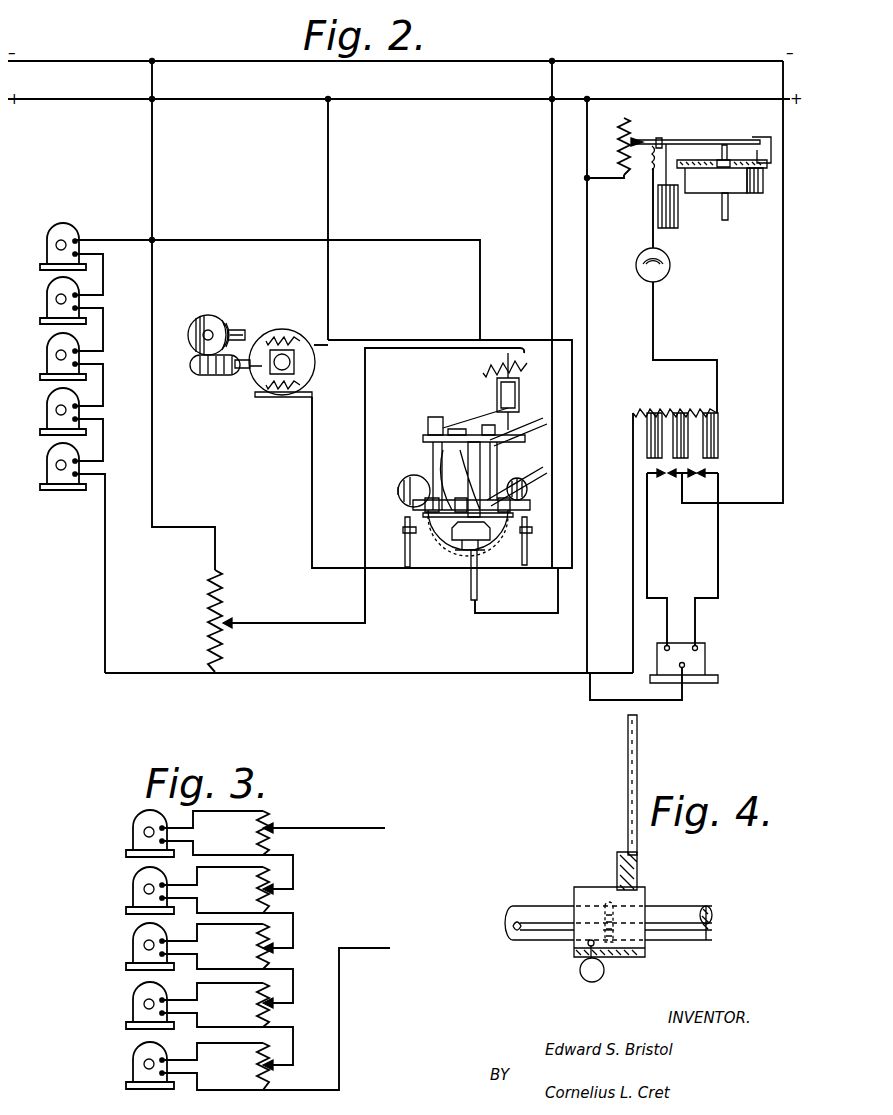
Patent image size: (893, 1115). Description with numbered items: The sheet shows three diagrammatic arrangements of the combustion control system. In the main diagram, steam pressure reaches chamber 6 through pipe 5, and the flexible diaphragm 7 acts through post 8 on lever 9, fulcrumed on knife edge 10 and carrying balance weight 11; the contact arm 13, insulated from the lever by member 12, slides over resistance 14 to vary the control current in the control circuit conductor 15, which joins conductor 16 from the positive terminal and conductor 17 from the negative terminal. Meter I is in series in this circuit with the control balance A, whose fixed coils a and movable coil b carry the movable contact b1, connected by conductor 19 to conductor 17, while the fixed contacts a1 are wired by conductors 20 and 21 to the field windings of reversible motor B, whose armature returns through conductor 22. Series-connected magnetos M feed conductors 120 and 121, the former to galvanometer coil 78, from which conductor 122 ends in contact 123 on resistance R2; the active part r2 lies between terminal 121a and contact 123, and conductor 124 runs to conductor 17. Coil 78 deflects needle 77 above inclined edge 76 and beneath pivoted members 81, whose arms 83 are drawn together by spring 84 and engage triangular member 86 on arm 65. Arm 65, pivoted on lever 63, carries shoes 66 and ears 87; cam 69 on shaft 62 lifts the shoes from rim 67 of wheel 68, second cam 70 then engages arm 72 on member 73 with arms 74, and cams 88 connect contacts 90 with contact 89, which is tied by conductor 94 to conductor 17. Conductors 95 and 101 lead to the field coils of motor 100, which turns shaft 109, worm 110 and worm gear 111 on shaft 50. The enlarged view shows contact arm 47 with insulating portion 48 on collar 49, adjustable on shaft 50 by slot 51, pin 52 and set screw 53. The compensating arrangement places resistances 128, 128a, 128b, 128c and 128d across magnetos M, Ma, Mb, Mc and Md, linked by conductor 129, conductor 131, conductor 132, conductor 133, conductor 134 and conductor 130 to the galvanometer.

In FIG. 2, the conductor 17 is at (478, 63).
In FIG. 2, the conductor 16 is at (632, 99).
In FIG. 2, the adjustable resistance 14 is at (618, 136).
In FIG. 2, the contact arm 13 is at (638, 138).
In FIG. 2, the insulating member 12 is at (659, 138).
In FIG. 2, the lever 9 is at (690, 140).
In FIG. 2, the knife edge 10 is at (758, 137).
In FIG. 2, the post 8 is at (730, 160).
In FIG. 2, the flexible diaphragm 7 is at (722, 168).
In FIG. 2, the chamber 6 is at (757, 194).
In FIG. 2, the pipe 5 is at (728, 208).
In FIG. 2, the balance weight 11 is at (678, 221).
In FIG. 2, the control circuit conductor 15 is at (325, 673).
In FIG. 2, the meter I is at (670, 268).
In FIG. 2, the conductor 19 is at (783, 310).
In FIG. 2, the conductor 120 is at (103, 240).
In FIG. 2, the magneto M is at (47, 262).
In FIG. 3, the magneto M is at (129, 832).
In FIG. 2, the conductor 121 is at (105, 590).
In FIG. 2, the conductor 124 is at (152, 483).
In FIG. 2, the worm gear 111 is at (209, 314).
In FIG. 2, the shaft 50 is at (243, 330).
In FIG. 4, the shaft 50 is at (690, 912).
In FIG. 2, the worm 110 is at (198, 377).
In FIG. 2, the shaft 109 is at (244, 370).
In FIG. 2, the double field series motor 100 is at (283, 398).
In FIG. 2, the conductor 101 is at (316, 509).
In FIG. 2, the resistance R2 is at (208, 614).
In FIG. 2, the contact 123 is at (228, 620).
In FIG. 2, the active resistance part r2 is at (223, 648).
In FIG. 2, the terminal 121a is at (214, 676).
In FIG. 2, the conductor 95 is at (396, 345).
In FIG. 2, the conductor 94 is at (518, 614).
In FIG. 2, the conductor 122 is at (366, 406).
In FIG. 2, the galvanometer movable coil 78 is at (519, 384).
In FIG. 2, the pivoted members 81 is at (434, 417).
In FIG. 2, the needle 77 is at (480, 416).
In FIG. 2, the inclined edge 76 is at (458, 420).
In FIG. 2, the spring 84 is at (423, 439).
In FIG. 2, the arms 83 is at (433, 452).
In FIG. 2, the member 73 is at (518, 422).
In FIG. 2, the arms 74 is at (520, 445).
In FIG. 2, the lever 63 is at (443, 462).
In FIG. 2, the arm 72 is at (517, 475).
In FIG. 2, the second cam 70 is at (520, 480).
In FIG. 2, the cams 88 is at (400, 488).
In FIG. 2, the wheel 68 is at (527, 490).
In FIG. 2, the shaft 62 is at (530, 508).
In FIG. 2, the metal shoes 66 is at (513, 517).
In FIG. 2, the contacts 90 is at (405, 520).
In FIG. 2, the metal ears 87 is at (403, 531).
In FIG. 2, the cam 69 is at (445, 540).
In FIG. 2, the triangular member 86 is at (463, 550).
In FIG. 2, the arm 65 is at (485, 550).
In FIG. 2, the rim 67 is at (513, 566).
In FIG. 2, the contact 89 is at (478, 590).
In FIG. 2, the control balance A is at (428, 581).
In FIG. 2, the conductor 22 is at (590, 600).
In FIG. 2, the fixed coils a is at (648, 445).
In FIG. 2, the movable coil b is at (680, 413).
In FIG. 2, the fixed contacts a1 is at (660, 478).
In FIG. 2, the movable contact b1 is at (680, 480).
In FIG. 2, the conductor 21 is at (647, 573).
In FIG. 2, the conductor 20 is at (718, 571).
In FIG. 2, the reversible motor B is at (706, 656).
In FIG. 3, the magneto Ma is at (131, 888).
In FIG. 3, the magneto Mb is at (131, 946).
In FIG. 3, the magneto Mc is at (131, 1005).
In FIG. 3, the magneto Md is at (131, 1064).
In FIG. 3, the resistance 128 is at (272, 822).
In FIG. 3, the conductor 129 is at (360, 829).
In FIG. 3, the conductor 131 is at (293, 878).
In FIG. 3, the resistance 128a is at (255, 889).
In FIG. 3, the conductor 132 is at (293, 922).
In FIG. 3, the resistance 128b is at (255, 948).
In FIG. 3, the conductor 133 is at (293, 984).
In FIG. 3, the resistance 128c is at (255, 1005).
In FIG. 3, the conductor 134 is at (293, 1044).
In FIG. 3, the resistance 128d is at (255, 1065).
In FIG. 3, the conductor 130 is at (339, 1008).
In FIG. 4, the contact arm 47 is at (637, 772).
In FIG. 4, the insulating portion 48 is at (639, 881).
In FIG. 4, the slot 51 is at (608, 904).
In FIG. 4, the collar 49 is at (645, 950).
In FIG. 4, the pin 52 is at (614, 935).
In FIG. 4, the set screw 53 is at (585, 977).